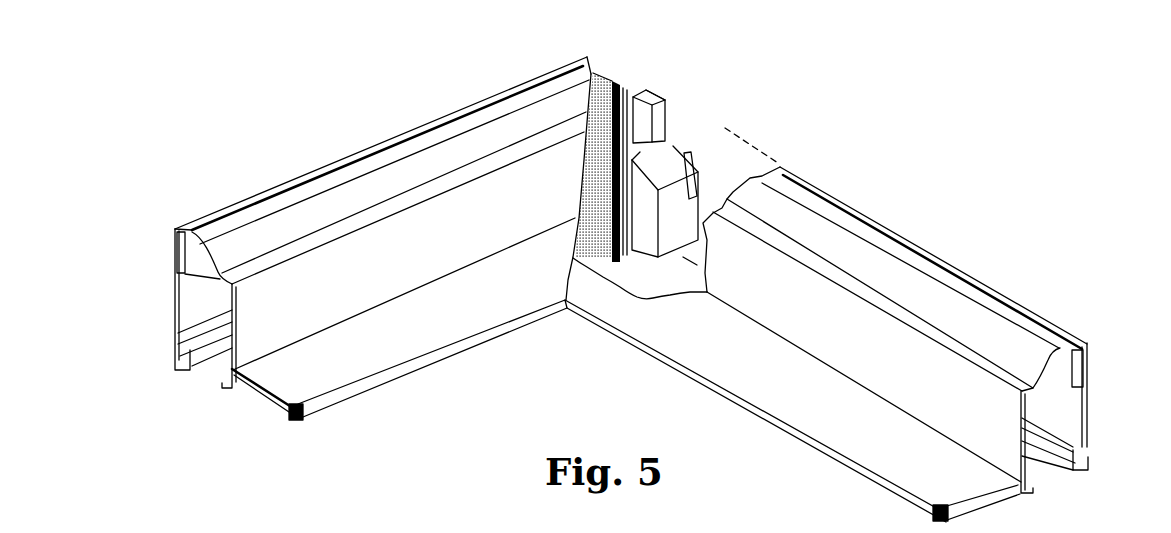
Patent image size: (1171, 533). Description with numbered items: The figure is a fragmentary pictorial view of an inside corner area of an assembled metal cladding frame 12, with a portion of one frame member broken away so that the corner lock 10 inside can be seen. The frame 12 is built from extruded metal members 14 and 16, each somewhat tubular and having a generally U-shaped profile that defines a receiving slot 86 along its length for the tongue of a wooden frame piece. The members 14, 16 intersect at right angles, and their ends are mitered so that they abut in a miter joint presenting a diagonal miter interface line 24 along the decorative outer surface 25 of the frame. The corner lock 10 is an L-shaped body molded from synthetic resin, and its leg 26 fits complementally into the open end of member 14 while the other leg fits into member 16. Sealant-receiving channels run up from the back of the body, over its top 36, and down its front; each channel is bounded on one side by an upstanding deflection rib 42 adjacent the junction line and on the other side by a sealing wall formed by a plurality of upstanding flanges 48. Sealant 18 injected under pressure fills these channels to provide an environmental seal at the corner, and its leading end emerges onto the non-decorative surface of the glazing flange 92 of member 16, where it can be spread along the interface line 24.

The corner lock 10 is at (659, 175).
The cladding frame 12 is at (383, 222).
The extruded metal frame member 14 is at (923, 292).
The extruded metal frame member 16 is at (337, 203).
The sealant 18 is at (630, 87).
The miter interface line 24 is at (566, 278).
The decorative outer surface 25 is at (626, 411).
The leg 26 is at (643, 244).
The top 36 is at (689, 148).
The deflection rib 42 is at (606, 73).
The flanges 48 is at (666, 95).
The receiving slot 86 is at (190, 297).
The glazing flange 92 is at (256, 389).